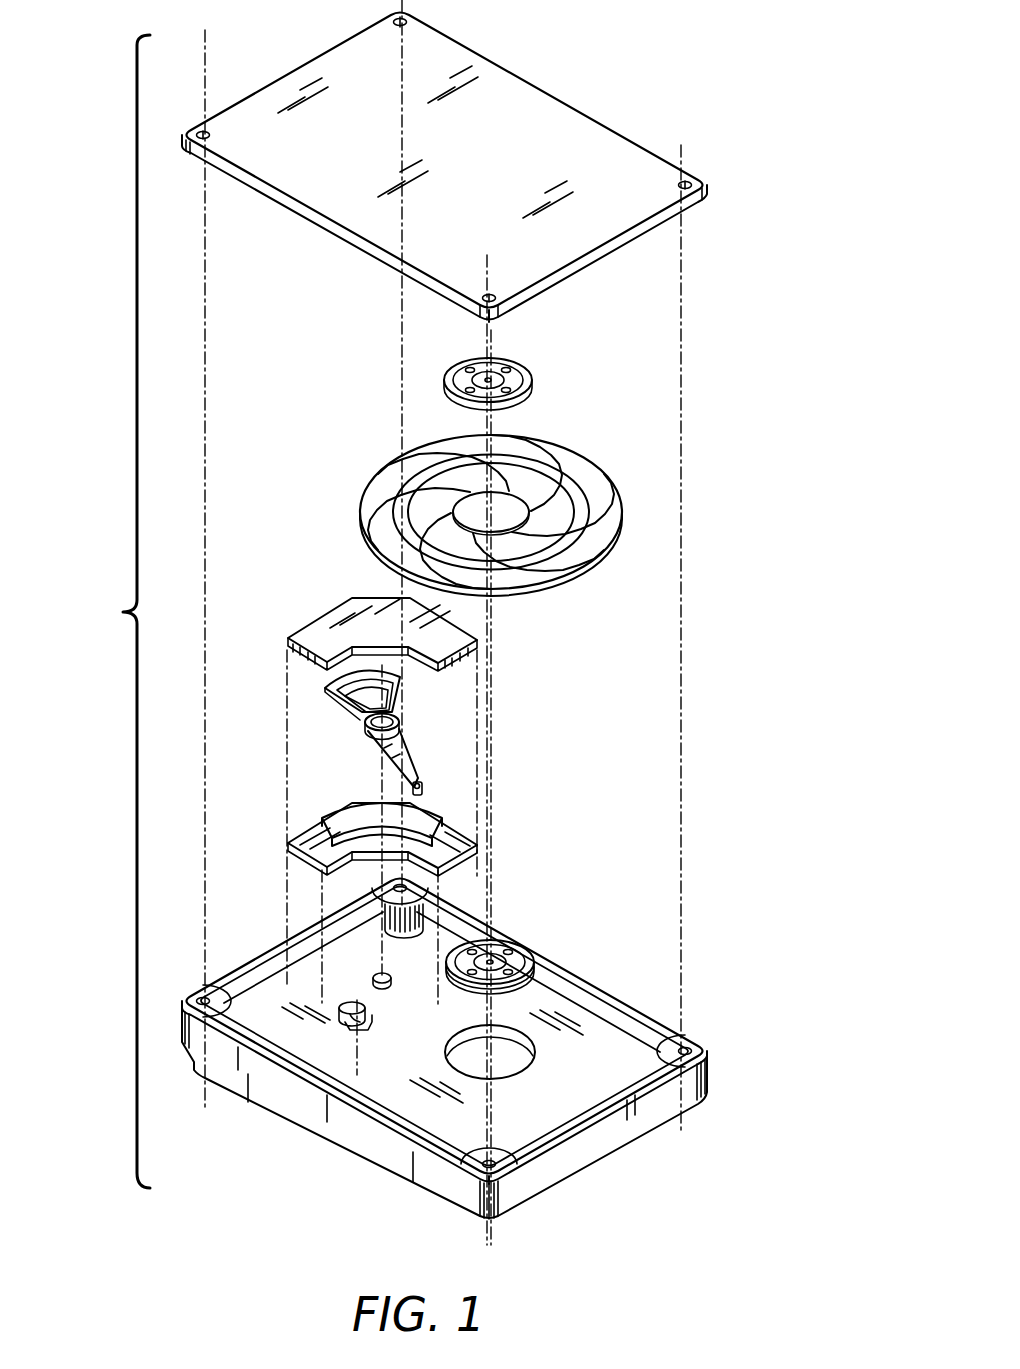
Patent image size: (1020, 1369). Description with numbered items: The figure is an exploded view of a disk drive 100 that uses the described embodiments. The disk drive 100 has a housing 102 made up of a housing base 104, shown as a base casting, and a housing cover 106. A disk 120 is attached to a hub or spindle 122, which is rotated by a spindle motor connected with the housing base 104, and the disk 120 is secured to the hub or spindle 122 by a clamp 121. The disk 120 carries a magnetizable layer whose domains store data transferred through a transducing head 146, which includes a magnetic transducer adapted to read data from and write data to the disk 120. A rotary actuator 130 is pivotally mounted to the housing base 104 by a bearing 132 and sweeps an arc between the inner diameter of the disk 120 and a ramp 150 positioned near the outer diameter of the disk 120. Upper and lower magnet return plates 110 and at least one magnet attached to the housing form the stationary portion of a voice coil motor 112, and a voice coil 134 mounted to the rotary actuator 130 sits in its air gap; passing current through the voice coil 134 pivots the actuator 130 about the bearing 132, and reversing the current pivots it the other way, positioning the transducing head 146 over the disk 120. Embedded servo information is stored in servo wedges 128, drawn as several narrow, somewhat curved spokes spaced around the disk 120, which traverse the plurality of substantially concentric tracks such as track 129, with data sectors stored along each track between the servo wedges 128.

The disk drive 100 is at (705, 490).
The housing 102 is at (118, 611).
The housing base 104 is at (444, 1049).
The housing cover 106 is at (532, 97).
The upper and lower magnet return plates 110 is at (304, 660).
The voice coil motor 112 is at (377, 715).
The disk 120 is at (510, 503).
The clamp 121 is at (523, 372).
The hub or spindle 122 is at (516, 944).
The servo wedges 128 is at (610, 523).
The track 129 is at (574, 496).
The rotary actuator 130 is at (429, 733).
The bearing 132 is at (398, 722).
The voice coil 134 is at (346, 703).
The transducing head 146 is at (420, 790).
The ramp 150 is at (385, 1018).